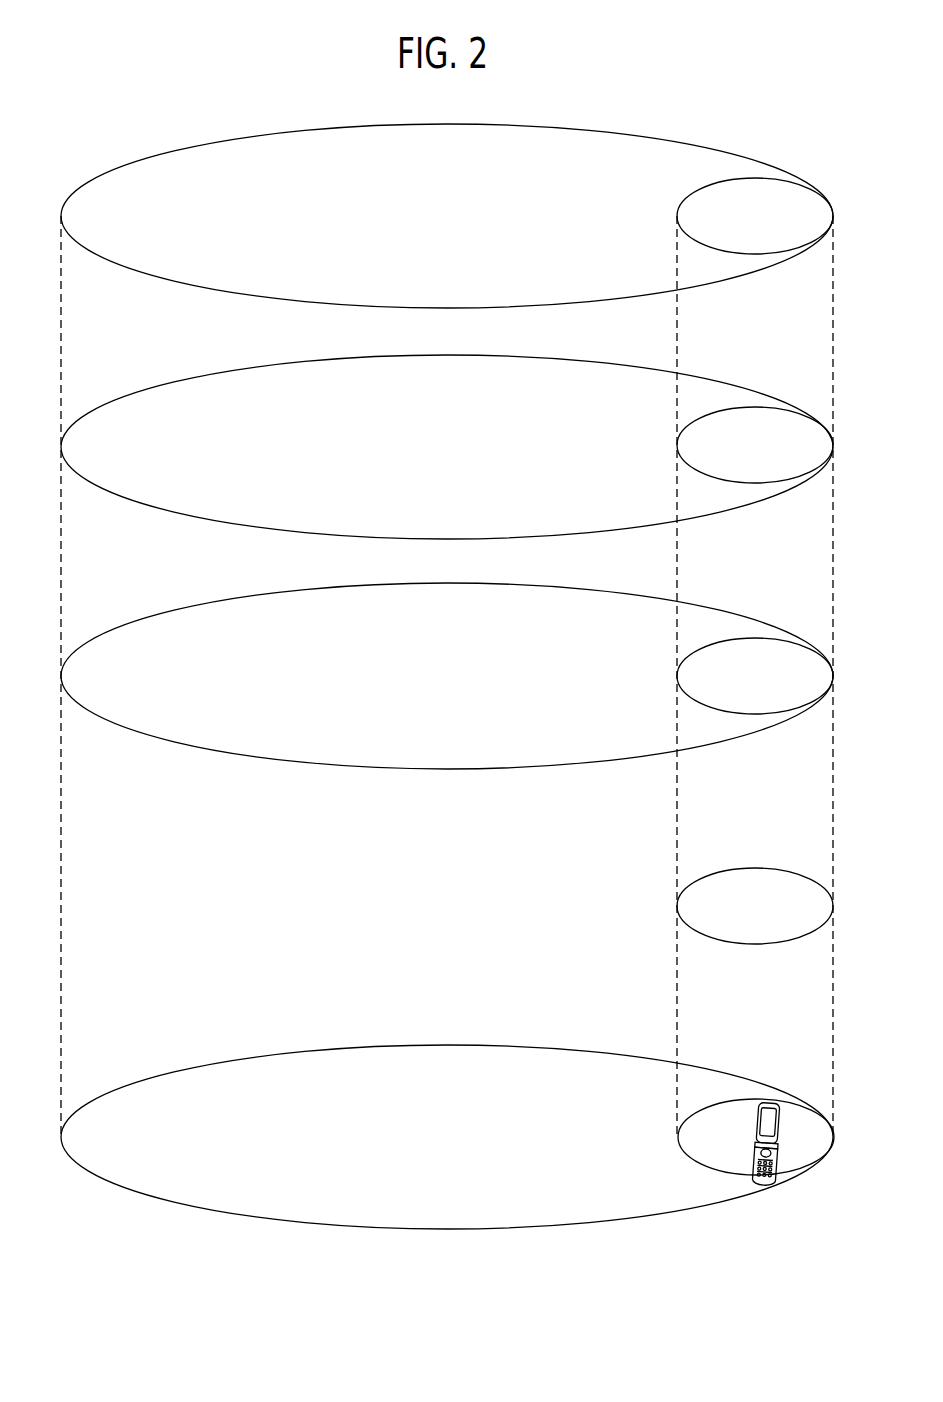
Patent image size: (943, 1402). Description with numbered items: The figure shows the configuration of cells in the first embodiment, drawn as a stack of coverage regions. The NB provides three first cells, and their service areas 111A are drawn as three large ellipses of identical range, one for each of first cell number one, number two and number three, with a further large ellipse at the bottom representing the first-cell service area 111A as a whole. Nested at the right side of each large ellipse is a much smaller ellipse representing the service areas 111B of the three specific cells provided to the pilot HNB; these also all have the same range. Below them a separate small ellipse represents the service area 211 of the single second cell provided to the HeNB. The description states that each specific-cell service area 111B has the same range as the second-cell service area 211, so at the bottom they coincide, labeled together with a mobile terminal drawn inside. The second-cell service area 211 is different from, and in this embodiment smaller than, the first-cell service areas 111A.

The service area of first cell 111A is at (447, 1112).
The service area of specific cell 111B is at (756, 1094).
The service area of second cell 211 is at (755, 986).